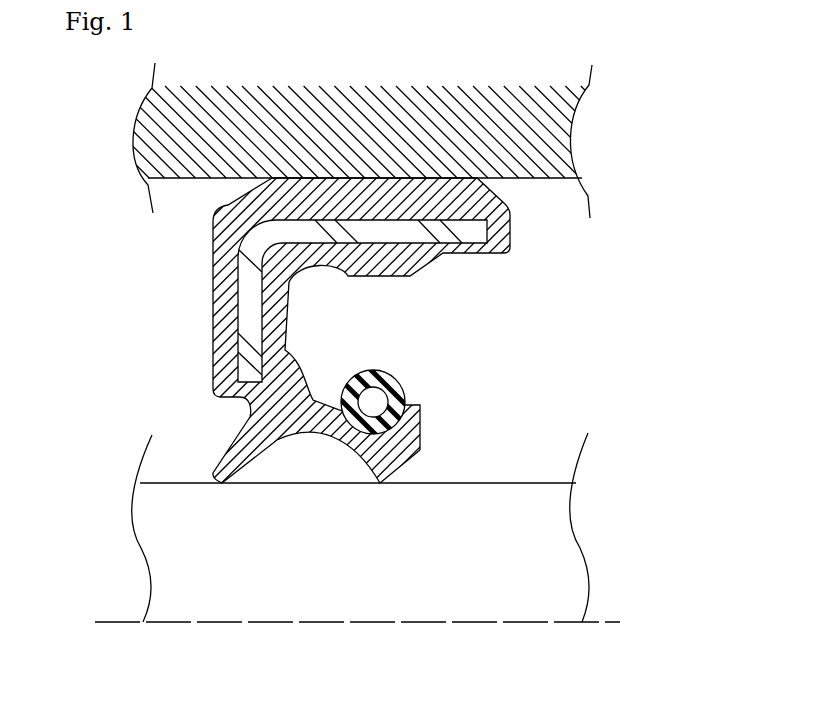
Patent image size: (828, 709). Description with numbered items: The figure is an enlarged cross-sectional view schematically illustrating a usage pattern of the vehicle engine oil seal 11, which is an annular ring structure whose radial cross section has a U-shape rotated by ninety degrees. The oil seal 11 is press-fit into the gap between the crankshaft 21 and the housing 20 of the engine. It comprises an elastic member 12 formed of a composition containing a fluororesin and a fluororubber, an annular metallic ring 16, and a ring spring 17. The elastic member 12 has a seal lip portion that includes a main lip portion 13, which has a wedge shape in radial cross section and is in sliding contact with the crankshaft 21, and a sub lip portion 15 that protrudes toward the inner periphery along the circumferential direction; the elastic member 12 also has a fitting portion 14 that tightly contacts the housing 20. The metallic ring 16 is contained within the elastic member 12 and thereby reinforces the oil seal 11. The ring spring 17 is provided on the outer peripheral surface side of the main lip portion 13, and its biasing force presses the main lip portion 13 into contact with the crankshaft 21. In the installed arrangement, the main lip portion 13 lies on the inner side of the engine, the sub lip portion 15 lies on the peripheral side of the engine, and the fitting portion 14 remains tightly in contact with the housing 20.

The vehicle engine oil seal 11 is at (131, 262).
The elastic member 12 is at (283, 372).
The main lip portion 13 is at (383, 470).
The fitting portion 14 is at (428, 178).
The sub lip portion 15 is at (237, 453).
The annular metallic ring 16 is at (472, 232).
The ring spring 17 is at (380, 401).
The housing 20 is at (563, 102).
The crankshaft 21 is at (548, 558).